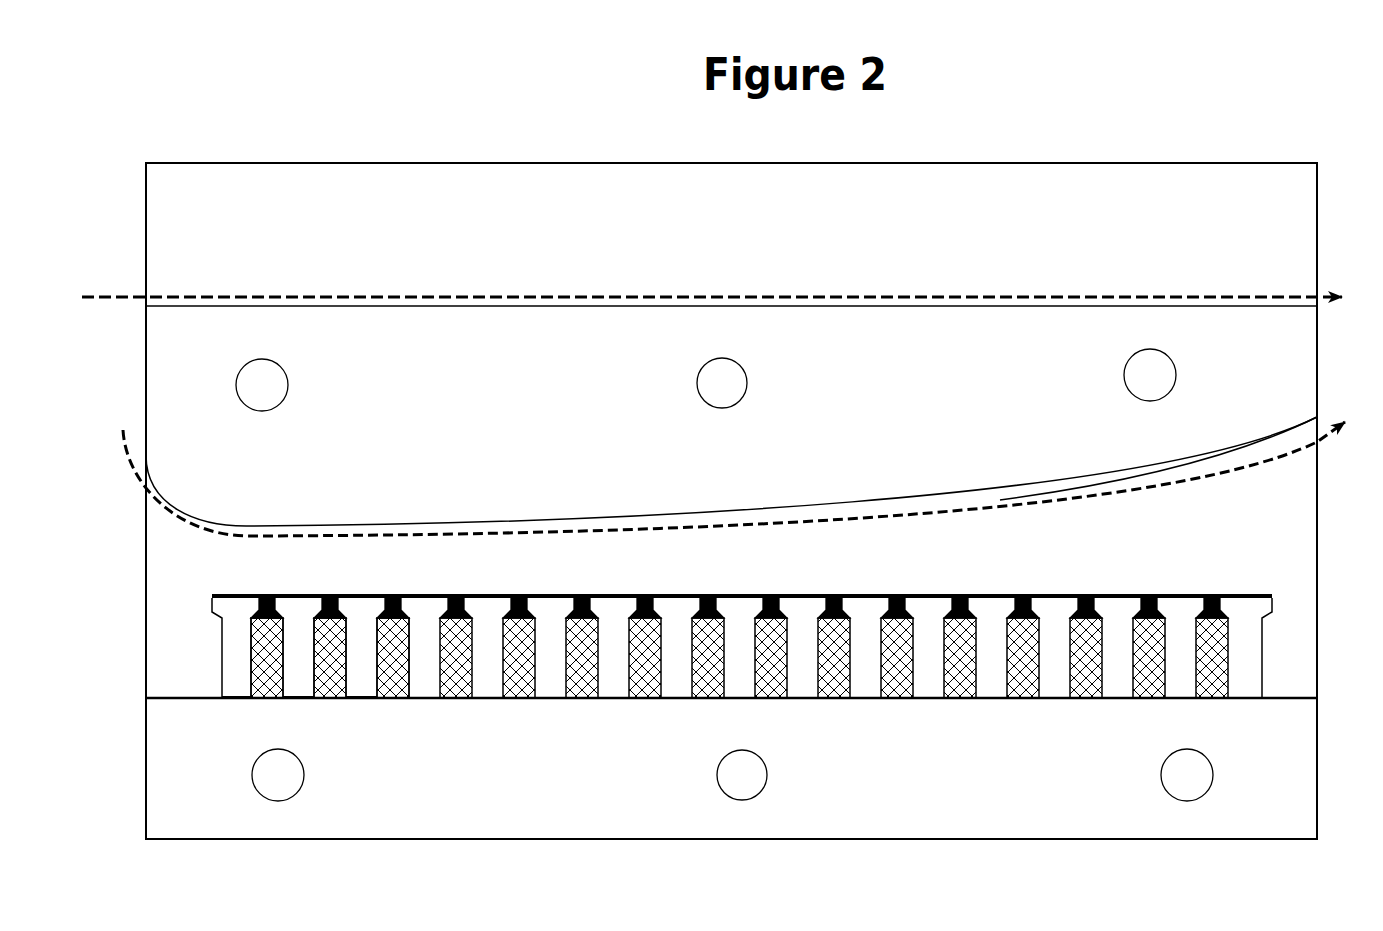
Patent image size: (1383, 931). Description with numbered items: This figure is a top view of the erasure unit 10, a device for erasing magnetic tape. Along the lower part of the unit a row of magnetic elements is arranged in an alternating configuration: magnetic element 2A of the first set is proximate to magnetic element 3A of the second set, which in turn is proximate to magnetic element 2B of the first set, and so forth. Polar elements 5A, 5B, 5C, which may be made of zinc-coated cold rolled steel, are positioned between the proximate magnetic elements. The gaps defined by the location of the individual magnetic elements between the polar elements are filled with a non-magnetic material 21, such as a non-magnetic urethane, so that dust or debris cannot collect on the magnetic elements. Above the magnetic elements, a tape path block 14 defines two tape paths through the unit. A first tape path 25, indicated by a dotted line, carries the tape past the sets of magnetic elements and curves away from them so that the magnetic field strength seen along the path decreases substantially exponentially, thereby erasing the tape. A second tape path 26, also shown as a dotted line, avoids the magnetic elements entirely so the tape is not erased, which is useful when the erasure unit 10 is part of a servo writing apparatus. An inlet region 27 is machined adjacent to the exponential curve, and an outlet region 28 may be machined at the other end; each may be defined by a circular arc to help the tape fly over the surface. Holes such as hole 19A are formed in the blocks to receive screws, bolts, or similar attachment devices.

The erasure unit 10 is at (976, 138).
The tape path block 14 is at (1288, 375).
The hole 19A is at (289, 380).
The non-magnetic material 21 is at (267, 594).
The first tape path 25 is at (726, 469).
The second tape path 26 is at (693, 297).
The inlet region 27 is at (197, 476).
The outlet region 28 is at (1266, 428).
The magnetic element 2A is at (270, 700).
The magnetic element 2B is at (396, 700).
The magnetic element 3A is at (332, 700).
The polar element 5A is at (238, 700).
The polar element 5B is at (303, 700).
The polar element 5C is at (358, 700).